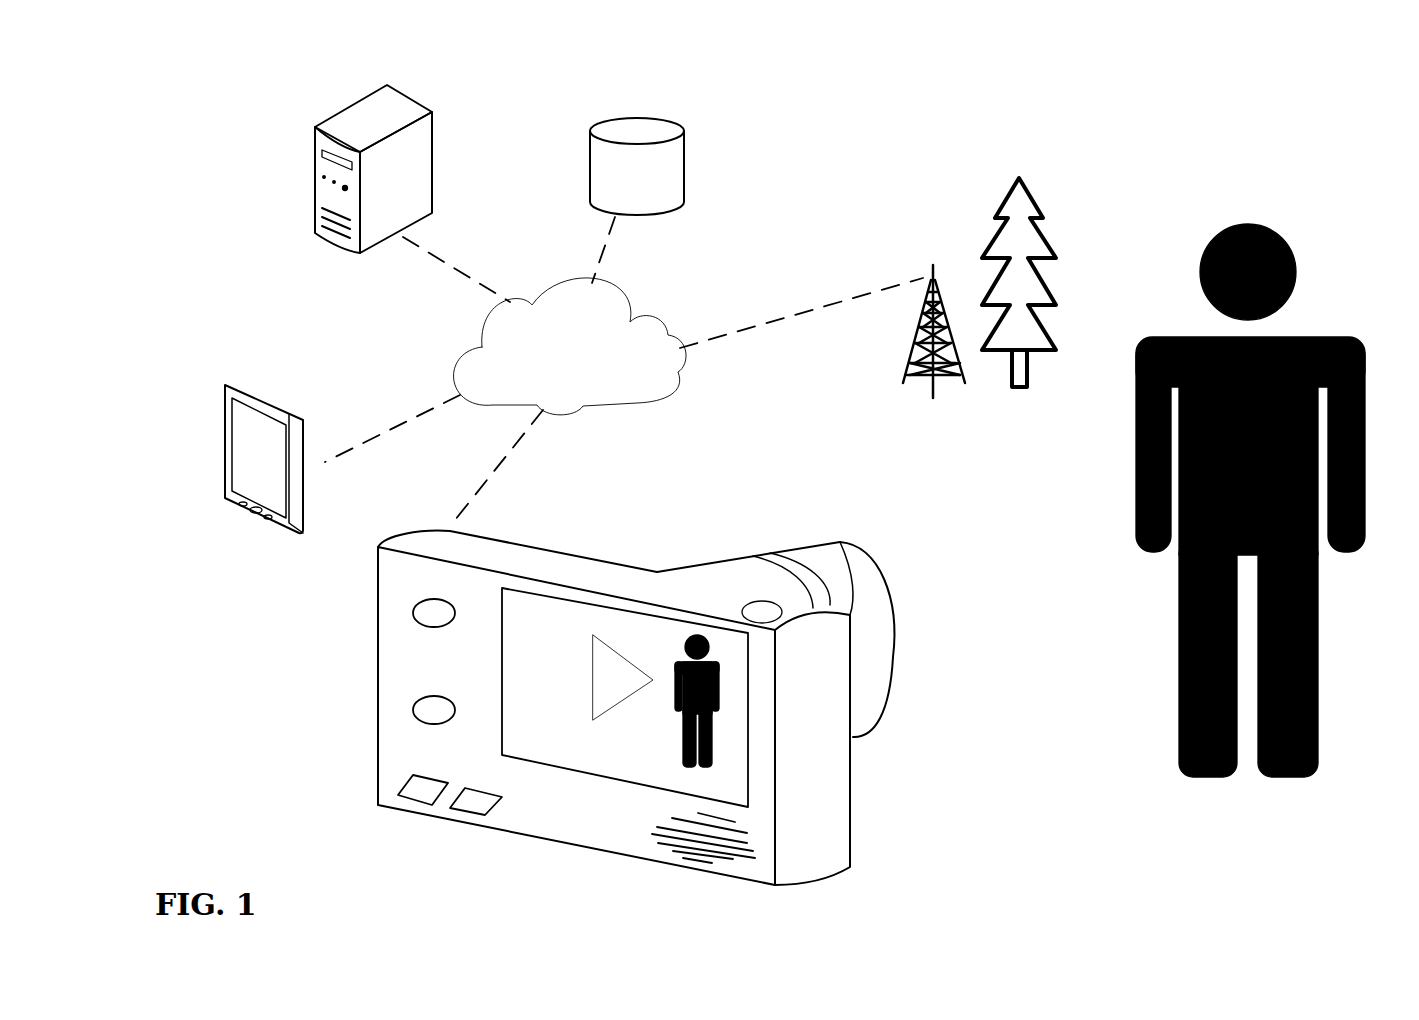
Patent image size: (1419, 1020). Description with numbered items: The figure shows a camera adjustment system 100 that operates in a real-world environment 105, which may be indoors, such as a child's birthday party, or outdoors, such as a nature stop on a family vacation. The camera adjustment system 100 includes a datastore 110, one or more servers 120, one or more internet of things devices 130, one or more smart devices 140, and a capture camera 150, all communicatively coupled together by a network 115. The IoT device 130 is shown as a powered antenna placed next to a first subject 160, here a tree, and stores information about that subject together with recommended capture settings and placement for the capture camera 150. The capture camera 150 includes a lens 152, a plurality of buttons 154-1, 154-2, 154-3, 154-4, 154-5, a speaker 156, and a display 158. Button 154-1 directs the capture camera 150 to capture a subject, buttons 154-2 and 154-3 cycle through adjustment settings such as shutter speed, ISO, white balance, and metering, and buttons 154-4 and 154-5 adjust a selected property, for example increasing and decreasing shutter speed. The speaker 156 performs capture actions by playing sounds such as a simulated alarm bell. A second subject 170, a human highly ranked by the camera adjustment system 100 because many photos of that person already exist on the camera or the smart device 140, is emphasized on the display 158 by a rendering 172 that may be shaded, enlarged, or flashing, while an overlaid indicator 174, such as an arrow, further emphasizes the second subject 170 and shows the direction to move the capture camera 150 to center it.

The camera adjustment system 100 is at (217, 112).
The real-world environment 105 is at (1150, 263).
The datastore 110 is at (655, 185).
The network 115 is at (587, 360).
The server 120 is at (413, 188).
The internet of things device 130 is at (950, 426).
The smart device 140 is at (280, 468).
The capture camera 150 is at (694, 692).
The lens 152 is at (760, 535).
The button 154-1 is at (745, 609).
The button 154-2 is at (447, 605).
The button 154-3 is at (448, 700).
The button 154-4 is at (420, 790).
The button 154-5 is at (472, 797).
The speaker 156 is at (630, 828).
The display 158 is at (556, 631).
The first subject 160 is at (1023, 198).
The second subject 170 is at (1266, 227).
The rendering 172 is at (690, 712).
The indicator 174 is at (628, 691).